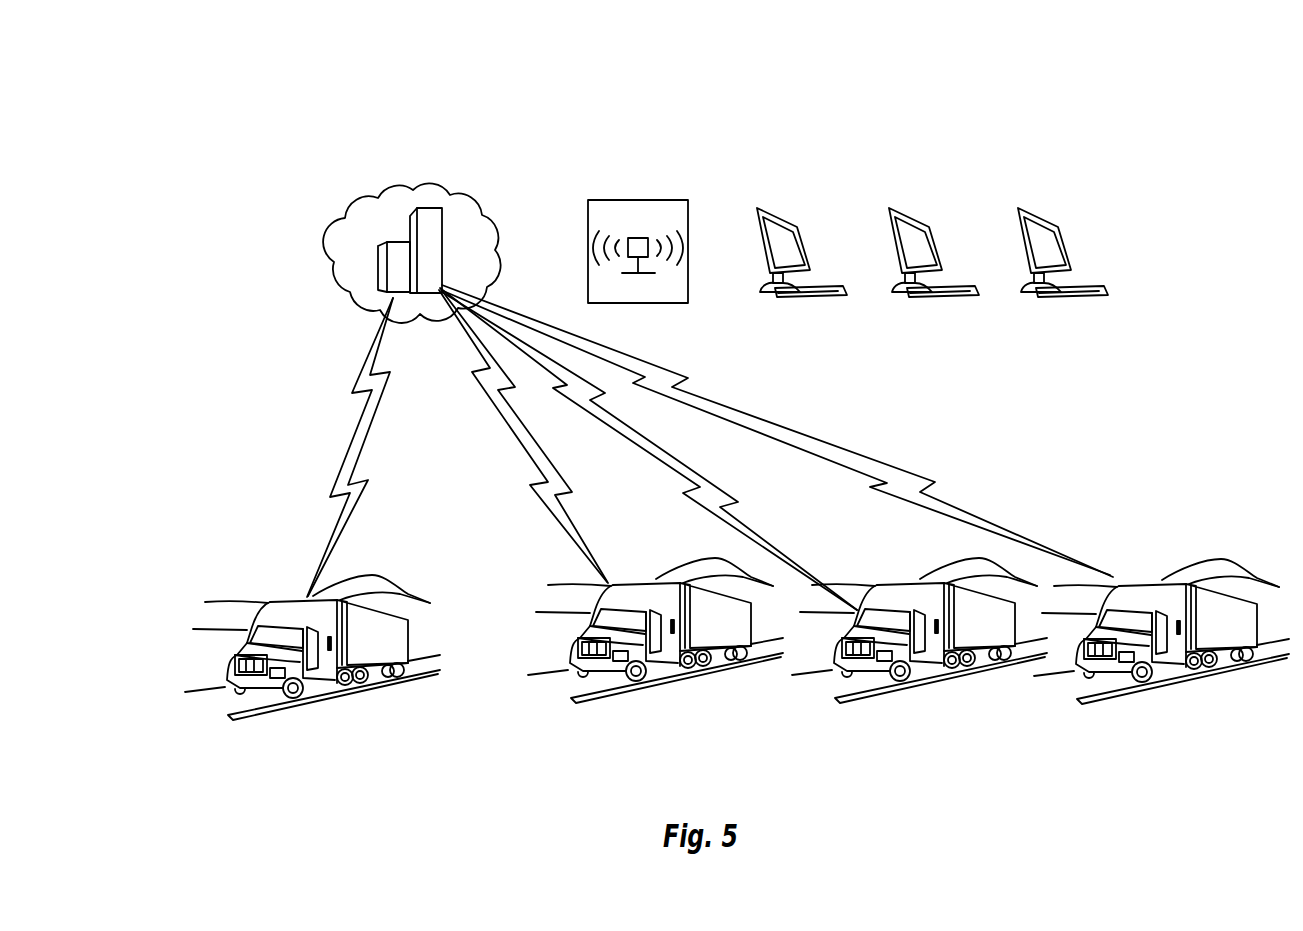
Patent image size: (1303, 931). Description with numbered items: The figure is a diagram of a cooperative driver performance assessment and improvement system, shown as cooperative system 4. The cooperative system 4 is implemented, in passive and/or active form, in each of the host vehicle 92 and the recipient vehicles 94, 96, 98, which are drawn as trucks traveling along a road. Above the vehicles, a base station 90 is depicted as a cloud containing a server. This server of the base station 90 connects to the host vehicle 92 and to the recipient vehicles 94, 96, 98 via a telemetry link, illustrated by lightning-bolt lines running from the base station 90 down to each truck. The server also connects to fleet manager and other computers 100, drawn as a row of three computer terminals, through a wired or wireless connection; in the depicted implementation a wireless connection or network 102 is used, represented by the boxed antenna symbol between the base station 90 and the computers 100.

The cooperative system 4 is at (288, 152).
The base station 90 is at (415, 195).
The host vehicle 92 is at (310, 703).
The recipient vehicle 94 is at (655, 683).
The recipient vehicle 96 is at (920, 683).
The recipient vehicle 98 is at (1158, 685).
The fleet manager and other computers 100 is at (780, 210).
The wireless connection or network 102 is at (632, 208).